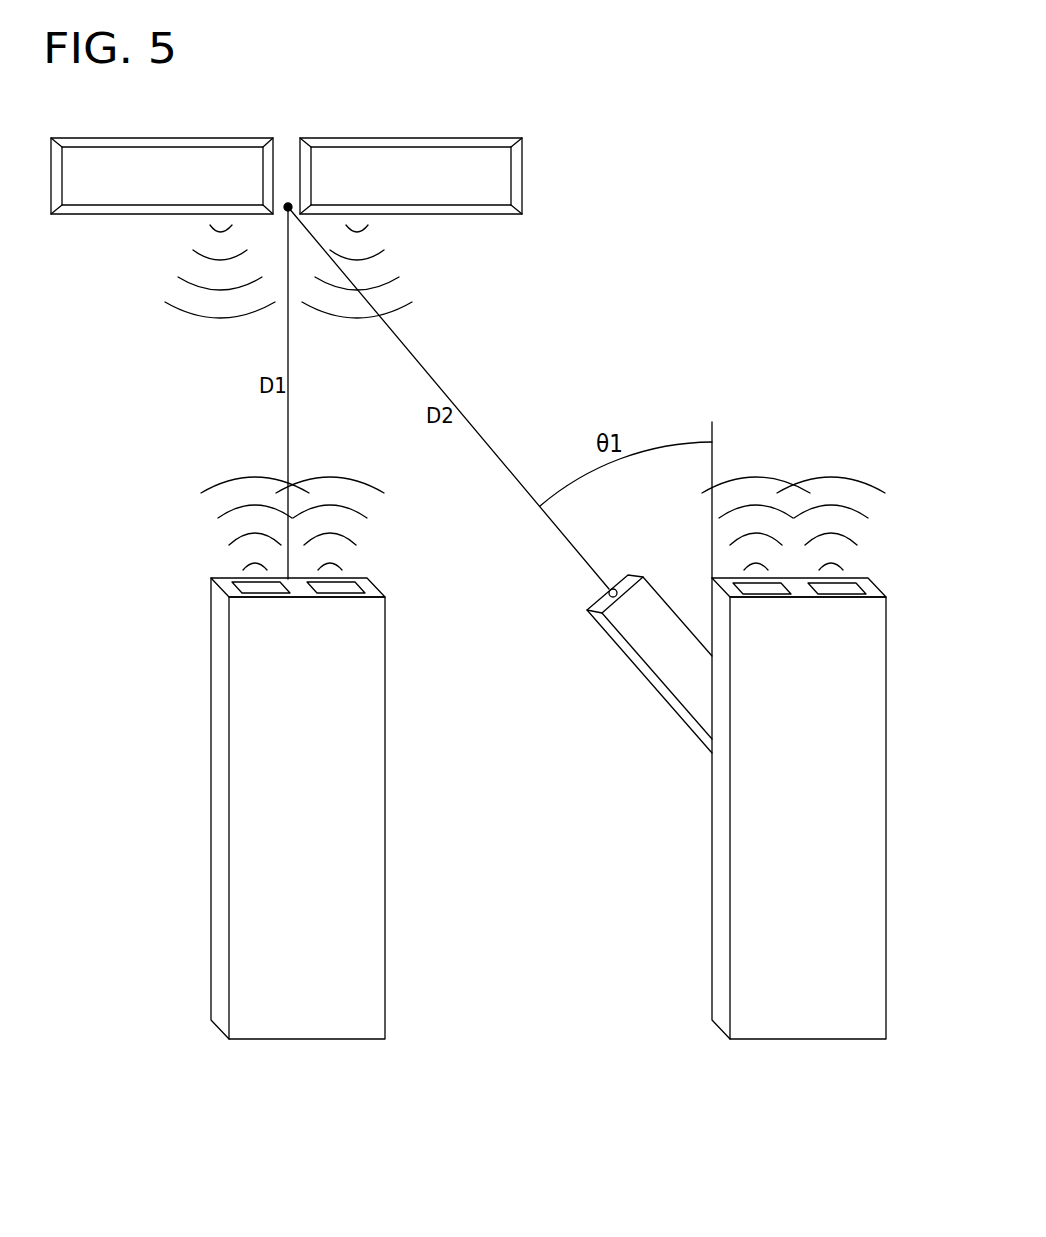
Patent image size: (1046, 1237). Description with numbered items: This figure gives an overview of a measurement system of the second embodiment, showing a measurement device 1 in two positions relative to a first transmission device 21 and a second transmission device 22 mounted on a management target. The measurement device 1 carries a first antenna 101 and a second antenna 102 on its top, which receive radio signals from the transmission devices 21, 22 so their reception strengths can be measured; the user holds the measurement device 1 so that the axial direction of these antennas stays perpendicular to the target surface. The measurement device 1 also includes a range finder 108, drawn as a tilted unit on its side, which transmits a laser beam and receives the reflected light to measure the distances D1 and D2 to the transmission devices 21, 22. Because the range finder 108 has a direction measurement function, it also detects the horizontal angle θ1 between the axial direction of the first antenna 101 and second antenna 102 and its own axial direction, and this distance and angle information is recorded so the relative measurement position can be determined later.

The measurement device 1 is at (371, 924).
The first transmission device 21 is at (182, 137).
The second transmission device 22 is at (427, 137).
The first antenna 101 is at (243, 587).
The second antenna 102 is at (347, 587).
The range finder 108 is at (618, 638).